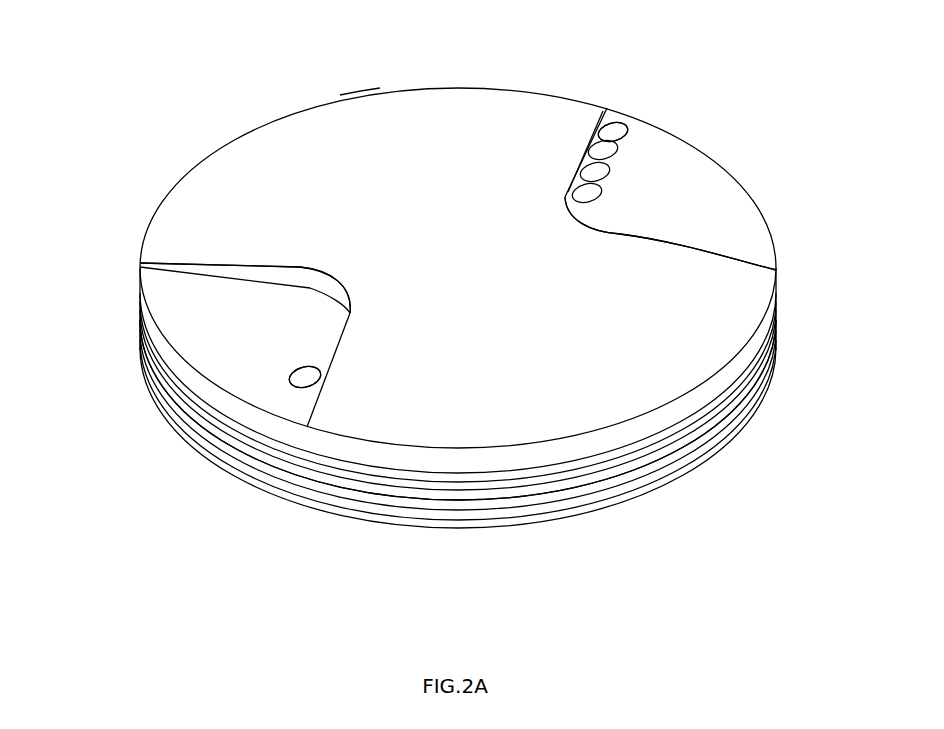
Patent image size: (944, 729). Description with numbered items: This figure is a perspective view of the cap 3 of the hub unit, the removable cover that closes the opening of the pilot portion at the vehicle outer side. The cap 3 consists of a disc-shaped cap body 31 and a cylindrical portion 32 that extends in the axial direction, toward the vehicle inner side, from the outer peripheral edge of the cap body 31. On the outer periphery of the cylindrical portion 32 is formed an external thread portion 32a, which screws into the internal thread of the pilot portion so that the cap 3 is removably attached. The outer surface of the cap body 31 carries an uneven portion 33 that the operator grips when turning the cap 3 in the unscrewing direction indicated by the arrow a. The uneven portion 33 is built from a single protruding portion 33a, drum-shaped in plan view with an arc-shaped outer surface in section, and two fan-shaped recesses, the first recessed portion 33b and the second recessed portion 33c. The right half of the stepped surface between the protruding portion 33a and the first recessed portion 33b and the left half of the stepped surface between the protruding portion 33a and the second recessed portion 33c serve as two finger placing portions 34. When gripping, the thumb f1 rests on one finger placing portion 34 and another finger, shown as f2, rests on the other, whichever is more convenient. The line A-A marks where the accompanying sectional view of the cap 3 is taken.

The cap 3 is at (453, 312).
The cap body 31 is at (278, 115).
The cylindrical portion 32 is at (600, 488).
The external thread portion 32a is at (555, 507).
The uneven portion 33 is at (198, 195).
The protruding portion 33a is at (358, 117).
The first recessed portion 33b is at (178, 302).
The second recessed portion 33c is at (740, 227).
The finger placing portion 34 is at (586, 150).
The thumb f1 is at (292, 383).
The second flow f2 is at (620, 152).
The arrow a is at (775, 457).
The line A- A is at (773, 142).